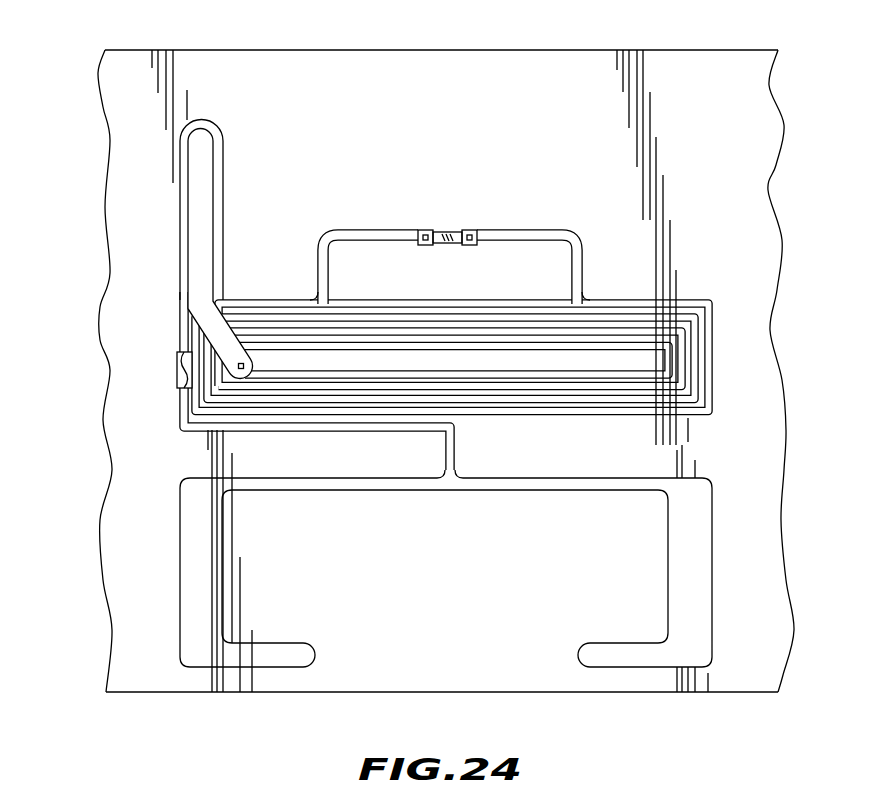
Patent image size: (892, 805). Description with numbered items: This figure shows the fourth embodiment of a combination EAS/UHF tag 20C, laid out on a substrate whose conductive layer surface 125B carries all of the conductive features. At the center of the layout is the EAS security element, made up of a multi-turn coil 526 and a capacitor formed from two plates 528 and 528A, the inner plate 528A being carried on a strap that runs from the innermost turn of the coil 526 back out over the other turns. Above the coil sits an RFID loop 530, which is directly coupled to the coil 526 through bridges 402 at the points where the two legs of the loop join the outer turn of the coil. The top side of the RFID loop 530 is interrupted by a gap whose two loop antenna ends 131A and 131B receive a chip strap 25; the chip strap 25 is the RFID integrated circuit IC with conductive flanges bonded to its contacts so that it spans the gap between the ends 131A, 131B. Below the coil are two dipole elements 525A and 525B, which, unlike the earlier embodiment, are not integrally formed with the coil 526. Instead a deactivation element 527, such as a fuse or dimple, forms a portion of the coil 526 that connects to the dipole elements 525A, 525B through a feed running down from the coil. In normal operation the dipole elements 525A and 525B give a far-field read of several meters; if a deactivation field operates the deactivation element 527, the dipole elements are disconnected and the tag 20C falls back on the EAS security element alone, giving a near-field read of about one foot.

The combination EAS/UHF tag 20C is at (572, 46).
The dipole antenna element 125B is at (613, 130).
The capacitor plate 528 is at (178, 196).
The capacitor plate 528A is at (197, 226).
The deactivation element 527 is at (177, 356).
The coil 526 is at (712, 362).
The RFID loop 530 is at (590, 237).
The bridge 402 is at (300, 291).
The chip strap 25 is at (466, 218).
The RFID integrated circuit IC is at (448, 231).
The loop antenna end 131A is at (425, 230).
The loop antenna end 131B is at (503, 196).
The dipole element 525A is at (202, 643).
The dipole element 525B is at (700, 643).